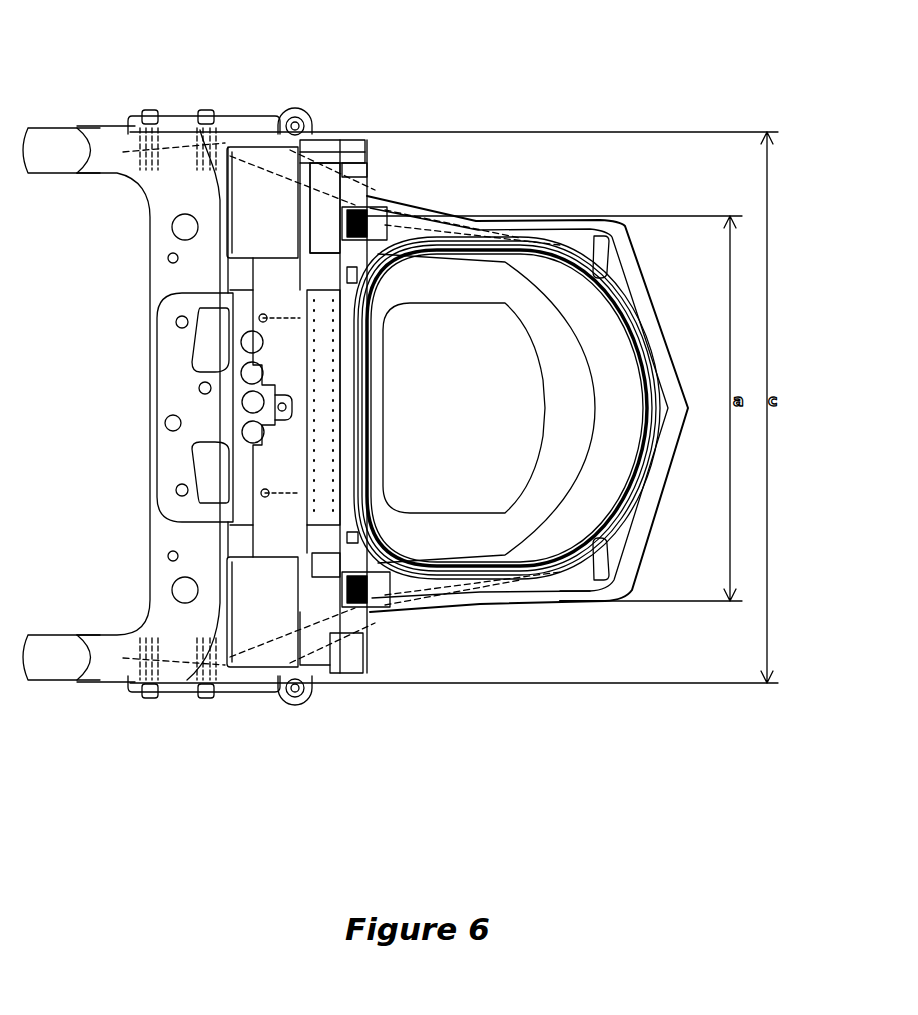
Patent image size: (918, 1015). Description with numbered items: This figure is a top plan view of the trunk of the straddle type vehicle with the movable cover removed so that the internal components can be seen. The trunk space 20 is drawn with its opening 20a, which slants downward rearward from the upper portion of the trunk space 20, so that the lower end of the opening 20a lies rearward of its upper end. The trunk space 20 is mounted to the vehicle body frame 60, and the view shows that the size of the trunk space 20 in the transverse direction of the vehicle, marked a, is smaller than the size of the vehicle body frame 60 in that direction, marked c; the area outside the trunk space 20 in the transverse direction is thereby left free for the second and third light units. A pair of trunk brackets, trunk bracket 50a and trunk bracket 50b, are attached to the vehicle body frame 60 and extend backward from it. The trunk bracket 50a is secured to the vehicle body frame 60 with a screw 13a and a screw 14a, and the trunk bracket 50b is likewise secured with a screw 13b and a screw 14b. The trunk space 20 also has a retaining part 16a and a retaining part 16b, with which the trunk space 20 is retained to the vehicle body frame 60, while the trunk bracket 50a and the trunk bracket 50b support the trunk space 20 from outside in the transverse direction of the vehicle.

The vehicle body frame 60 is at (107, 137).
The screw 13b is at (148, 112).
The screw 14b is at (206, 112).
The screw 13a is at (147, 700).
The screw 14a is at (205, 700).
The trunk bracket 50b is at (300, 130).
The trunk bracket 50a is at (252, 655).
The retaining part 16b is at (264, 314).
The retaining part 16a is at (265, 497).
The trunk space 20 is at (478, 198).
The opening 20a is at (547, 243).